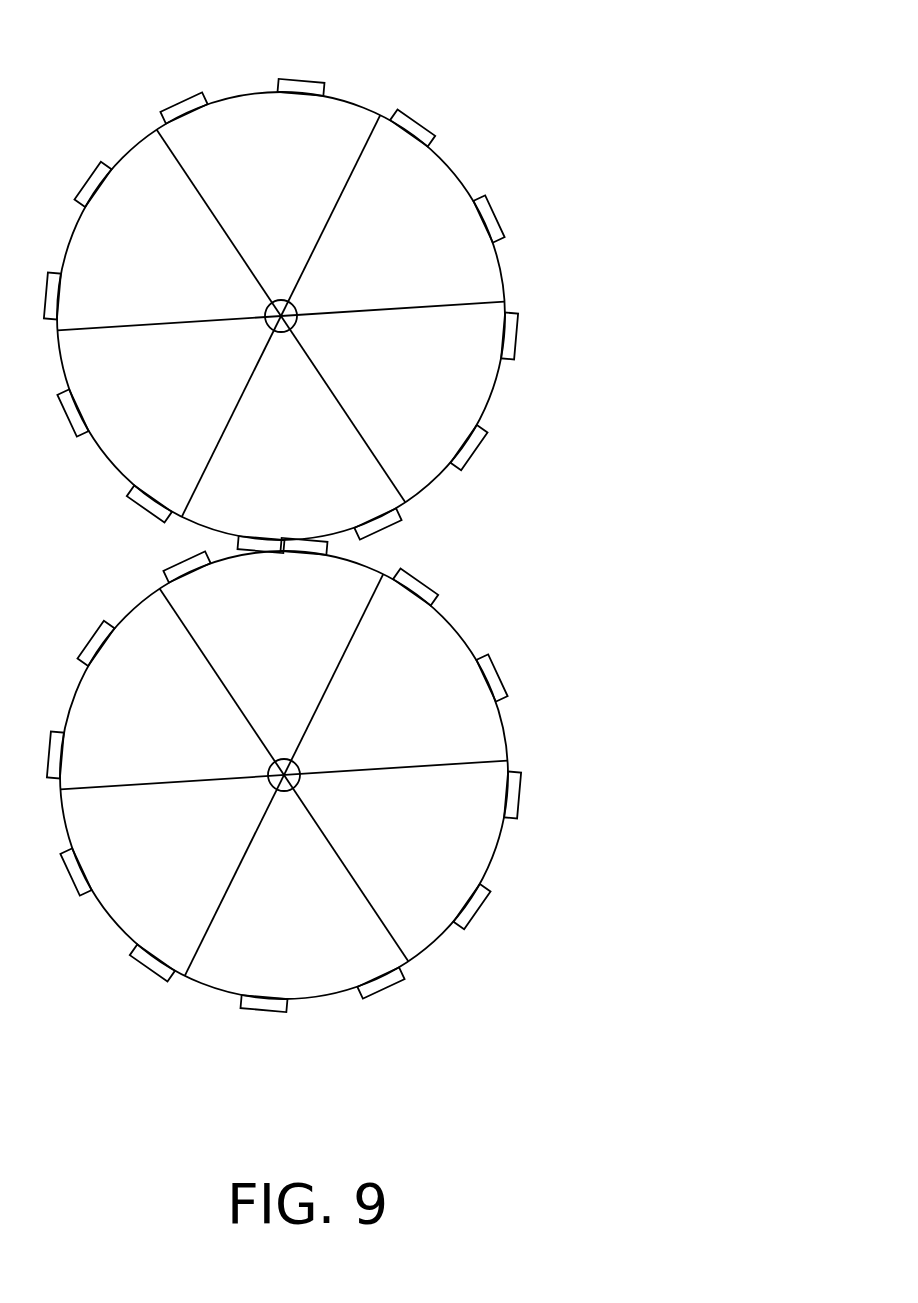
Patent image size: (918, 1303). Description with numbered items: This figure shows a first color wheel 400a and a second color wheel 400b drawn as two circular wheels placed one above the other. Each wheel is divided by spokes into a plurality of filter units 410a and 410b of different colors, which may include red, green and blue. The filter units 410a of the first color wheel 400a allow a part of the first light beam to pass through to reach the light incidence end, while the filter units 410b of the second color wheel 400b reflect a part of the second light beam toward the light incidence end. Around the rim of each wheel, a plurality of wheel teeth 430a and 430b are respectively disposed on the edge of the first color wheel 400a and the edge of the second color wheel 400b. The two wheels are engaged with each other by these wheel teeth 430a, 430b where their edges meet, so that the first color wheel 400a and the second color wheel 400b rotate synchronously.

The first color wheel 400a is at (377, 775).
The second color wheel 400b is at (355, 292).
The filter units 410a is at (433, 635).
The filter units 410b is at (478, 287).
The wheel teeth 430a is at (498, 680).
The wheel teeth 430b is at (412, 127).